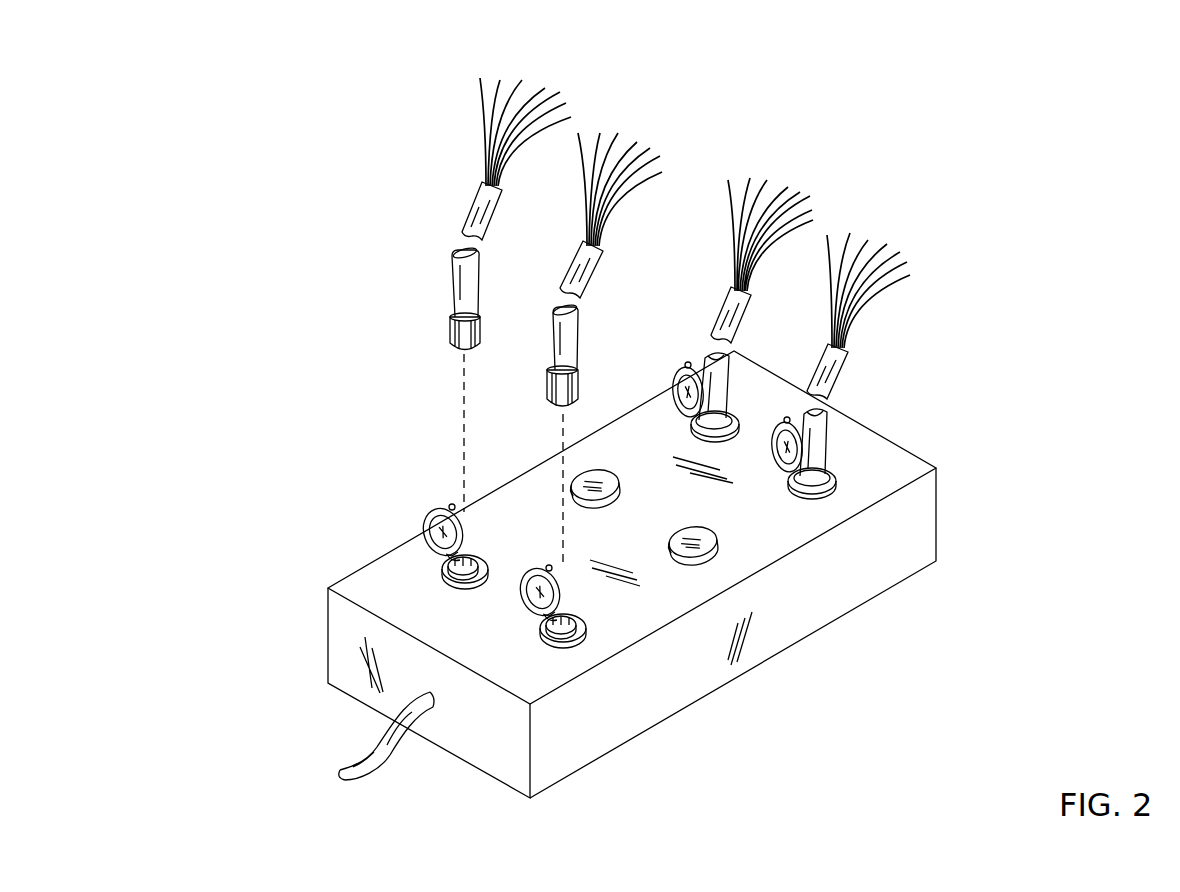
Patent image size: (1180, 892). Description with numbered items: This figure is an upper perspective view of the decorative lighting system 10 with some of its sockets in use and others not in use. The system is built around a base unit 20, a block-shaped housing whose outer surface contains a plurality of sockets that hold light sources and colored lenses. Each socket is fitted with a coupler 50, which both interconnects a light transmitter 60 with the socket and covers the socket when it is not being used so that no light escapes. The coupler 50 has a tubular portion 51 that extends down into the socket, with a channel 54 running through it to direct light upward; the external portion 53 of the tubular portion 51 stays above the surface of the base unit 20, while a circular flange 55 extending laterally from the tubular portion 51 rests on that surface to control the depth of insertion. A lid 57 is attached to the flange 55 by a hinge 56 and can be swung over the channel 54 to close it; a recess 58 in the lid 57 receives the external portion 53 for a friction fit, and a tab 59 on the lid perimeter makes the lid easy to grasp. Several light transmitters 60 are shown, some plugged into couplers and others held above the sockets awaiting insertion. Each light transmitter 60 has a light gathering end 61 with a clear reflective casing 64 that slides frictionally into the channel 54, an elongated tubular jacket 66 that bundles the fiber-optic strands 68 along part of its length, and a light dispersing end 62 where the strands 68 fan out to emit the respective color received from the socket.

The decorative lighting system 10 is at (165, 172).
The base unit 20 is at (922, 527).
The coupler 50 is at (732, 532).
The tubular portion 51 is at (502, 547).
The external portion 53 is at (452, 583).
The channel 54 is at (477, 578).
The circular flange 55 is at (440, 578).
The hinge 56 is at (437, 560).
The lid 57 is at (432, 536).
The recess 58 is at (436, 526).
The tab 59 is at (438, 514).
The light transmitter 60 is at (423, 256).
The light gathering end 61 is at (428, 338).
The light dispersing end 62 is at (464, 150).
The reflective casing 64 is at (452, 333).
The elongated tubular jacket 66 is at (455, 292).
The fiber-optic strands 68 is at (483, 78).